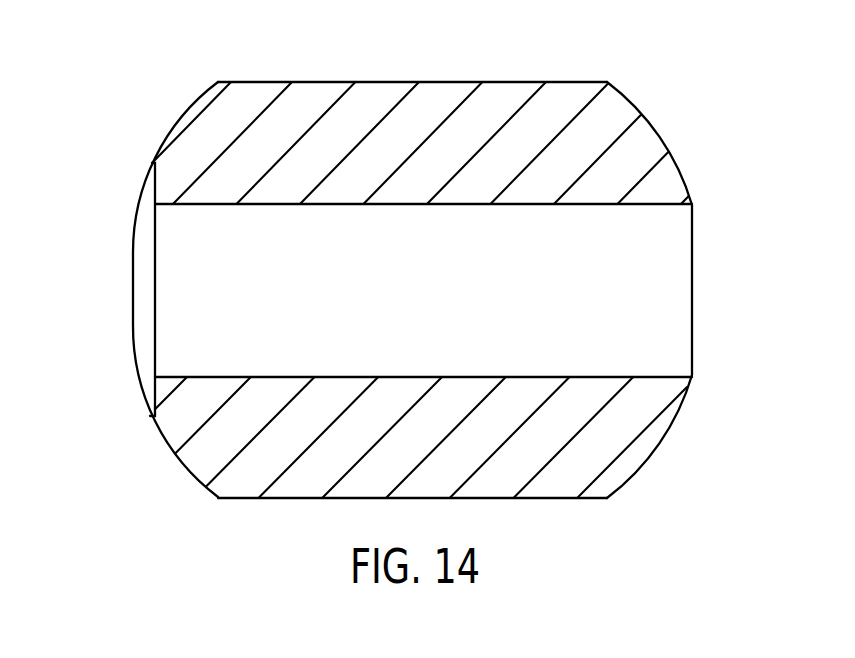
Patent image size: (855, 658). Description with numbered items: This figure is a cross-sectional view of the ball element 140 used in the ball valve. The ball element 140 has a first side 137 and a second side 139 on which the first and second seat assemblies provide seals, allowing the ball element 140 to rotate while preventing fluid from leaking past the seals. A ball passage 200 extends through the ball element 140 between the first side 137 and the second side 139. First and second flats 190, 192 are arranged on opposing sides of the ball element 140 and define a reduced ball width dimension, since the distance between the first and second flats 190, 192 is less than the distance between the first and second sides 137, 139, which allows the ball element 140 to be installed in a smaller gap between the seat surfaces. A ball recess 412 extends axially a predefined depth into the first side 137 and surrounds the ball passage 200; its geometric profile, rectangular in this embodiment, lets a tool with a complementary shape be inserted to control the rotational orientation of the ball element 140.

The first side 137 is at (133, 230).
The second side 139 is at (692, 243).
The ball element 140 is at (208, 447).
The first flat 190 is at (530, 82).
The second flat 192 is at (533, 498).
The ball passage 200 is at (380, 377).
The ball recess 412 is at (153, 394).